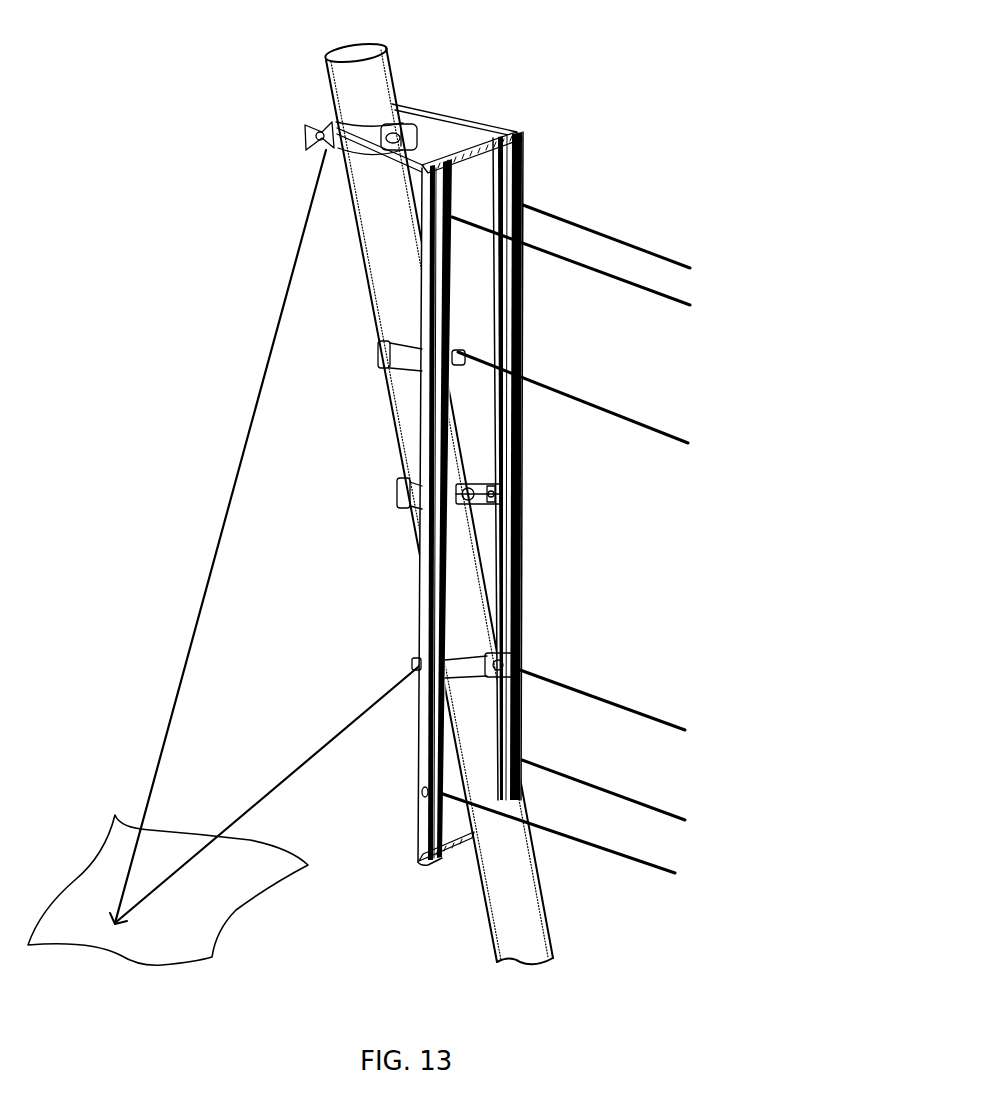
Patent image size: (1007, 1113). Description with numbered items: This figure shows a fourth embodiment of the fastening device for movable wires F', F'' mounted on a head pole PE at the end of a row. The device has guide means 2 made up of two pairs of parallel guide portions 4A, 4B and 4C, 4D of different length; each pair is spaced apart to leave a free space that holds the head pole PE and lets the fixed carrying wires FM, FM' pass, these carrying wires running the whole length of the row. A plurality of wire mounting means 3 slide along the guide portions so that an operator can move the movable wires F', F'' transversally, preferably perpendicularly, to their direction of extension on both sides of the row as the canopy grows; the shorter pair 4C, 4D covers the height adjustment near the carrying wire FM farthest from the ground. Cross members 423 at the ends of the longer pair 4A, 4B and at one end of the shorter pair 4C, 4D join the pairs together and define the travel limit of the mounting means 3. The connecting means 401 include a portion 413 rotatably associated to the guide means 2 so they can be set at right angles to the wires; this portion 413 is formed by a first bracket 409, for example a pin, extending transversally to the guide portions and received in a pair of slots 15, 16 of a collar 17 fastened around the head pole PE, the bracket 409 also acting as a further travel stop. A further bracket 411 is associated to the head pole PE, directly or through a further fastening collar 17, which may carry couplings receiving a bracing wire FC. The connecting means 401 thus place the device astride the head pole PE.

The guide means 2 is at (532, 118).
The wire mounting means 3 is at (446, 525).
The guide portion 4A is at (428, 215).
The guide portion 4B is at (527, 148).
The guide portion 4C is at (448, 400).
The guide portion 4D is at (494, 260).
The slot 15 is at (518, 562).
The slot 16 is at (518, 504).
The collar 17 is at (345, 152).
The connecting means 401 is at (342, 513).
The first bracket 409 is at (428, 506).
The further bracket 411 is at (447, 116).
The portion 413 is at (540, 479).
The cross member 423 is at (463, 150).
The head pole PE is at (343, 48).
The bracing wire FC is at (240, 460).
The carrying wire FM is at (573, 397).
The carrying wire FM' is at (602, 683).
The movable wire F' is at (562, 798).
The movable wire F'' is at (571, 241).